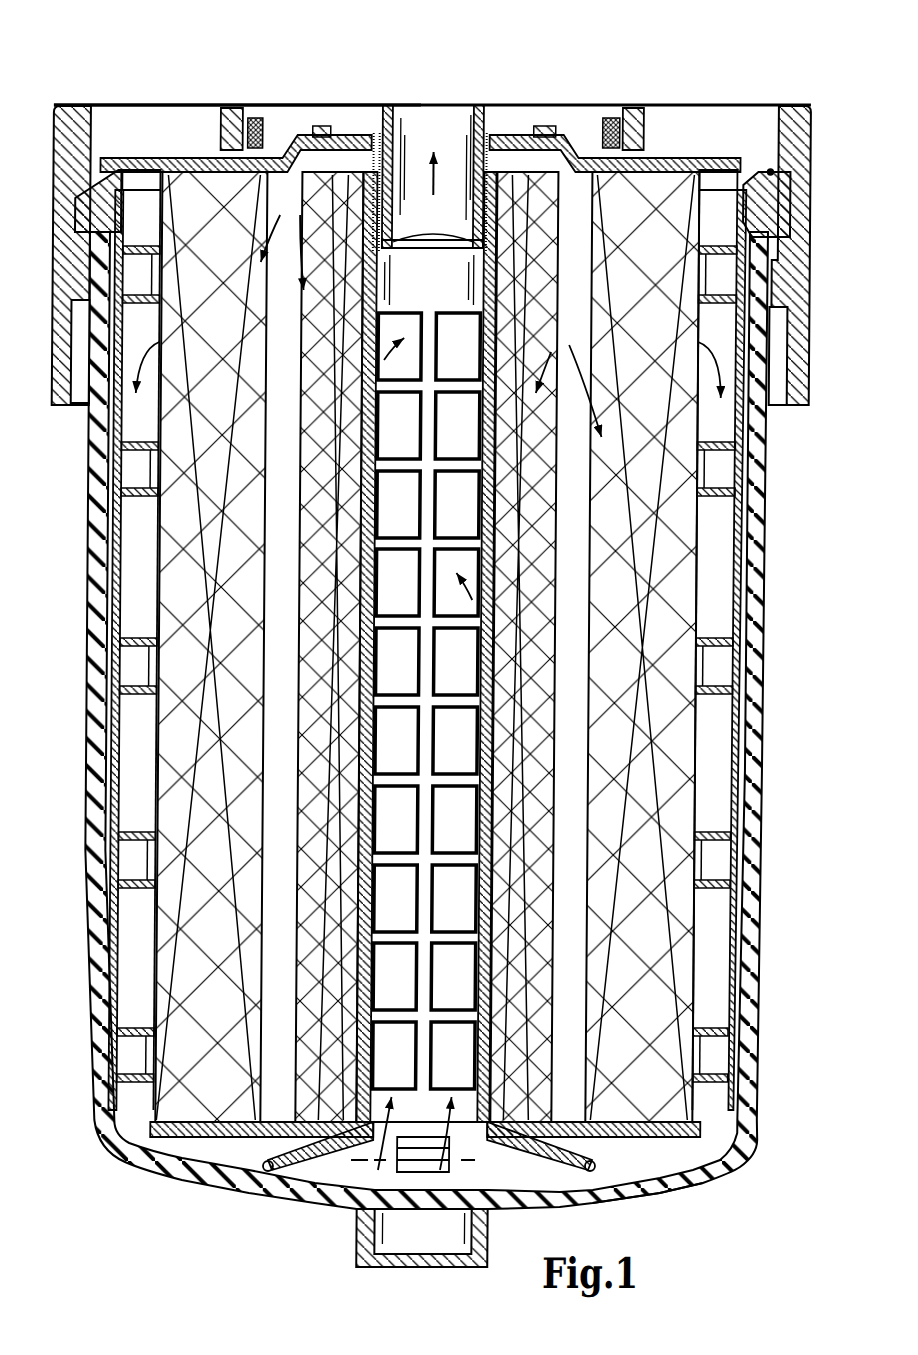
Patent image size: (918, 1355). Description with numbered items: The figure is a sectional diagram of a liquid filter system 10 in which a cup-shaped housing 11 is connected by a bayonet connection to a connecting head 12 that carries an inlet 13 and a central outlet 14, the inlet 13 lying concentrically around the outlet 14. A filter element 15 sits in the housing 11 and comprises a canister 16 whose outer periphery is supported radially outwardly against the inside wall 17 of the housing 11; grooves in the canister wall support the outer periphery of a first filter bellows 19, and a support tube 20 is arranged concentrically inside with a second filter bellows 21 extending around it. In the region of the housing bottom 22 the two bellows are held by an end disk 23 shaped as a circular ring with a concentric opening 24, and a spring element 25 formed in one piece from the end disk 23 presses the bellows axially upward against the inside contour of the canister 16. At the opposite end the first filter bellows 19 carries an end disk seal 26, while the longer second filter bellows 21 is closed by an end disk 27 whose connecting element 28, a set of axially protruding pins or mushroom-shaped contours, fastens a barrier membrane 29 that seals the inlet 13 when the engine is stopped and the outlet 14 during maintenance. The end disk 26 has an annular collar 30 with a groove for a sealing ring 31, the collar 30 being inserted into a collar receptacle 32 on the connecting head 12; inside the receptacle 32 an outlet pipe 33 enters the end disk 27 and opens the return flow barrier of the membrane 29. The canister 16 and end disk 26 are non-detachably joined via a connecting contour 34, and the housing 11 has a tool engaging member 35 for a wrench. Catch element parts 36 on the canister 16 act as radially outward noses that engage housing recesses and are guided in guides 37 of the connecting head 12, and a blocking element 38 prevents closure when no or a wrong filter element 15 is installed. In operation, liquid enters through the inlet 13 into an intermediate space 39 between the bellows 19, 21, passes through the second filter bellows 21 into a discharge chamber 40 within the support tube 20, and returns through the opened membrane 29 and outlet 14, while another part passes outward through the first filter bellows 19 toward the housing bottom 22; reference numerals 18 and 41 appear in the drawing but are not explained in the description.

The liquid filter system 10 is at (160, 97).
The cup-shaped housing 11 is at (132, 1163).
The connecting head 12 is at (793, 262).
The inlet 13 is at (273, 150).
The outlet 14 is at (428, 131).
The filter element 15 is at (710, 598).
The canister 16 is at (738, 712).
The inside wall 17 is at (738, 478).
The inner wall 18 is at (703, 740).
The first filter bellows 19 is at (684, 806).
The support tube 20 is at (459, 930).
The second filter bellows 21 is at (549, 672).
The housing bottom 22 is at (697, 1183).
The end disk 23 is at (221, 1140).
The concentric opening 24 is at (430, 1128).
The spring element 25 is at (297, 1170).
The end disk seal 26 is at (718, 158).
The end disk 27 is at (356, 130).
The connecting element 28 is at (322, 124).
The barrier membrane 29 is at (553, 124).
The annular collar 30 is at (612, 112).
The sealing ring 31 is at (634, 108).
The collar receptacle 32 is at (234, 106).
The outlet pipe 33 is at (486, 132).
The connecting contour 34 is at (773, 172).
The tool engaging member 35 is at (380, 1260).
The catch element parts 36 is at (780, 212).
The guides 37 is at (80, 398).
The blocking element 38 is at (55, 288).
The intermediate space 39 is at (271, 673).
The discharge chamber 40 is at (391, 441).
The support sleeve 41 is at (132, 598).